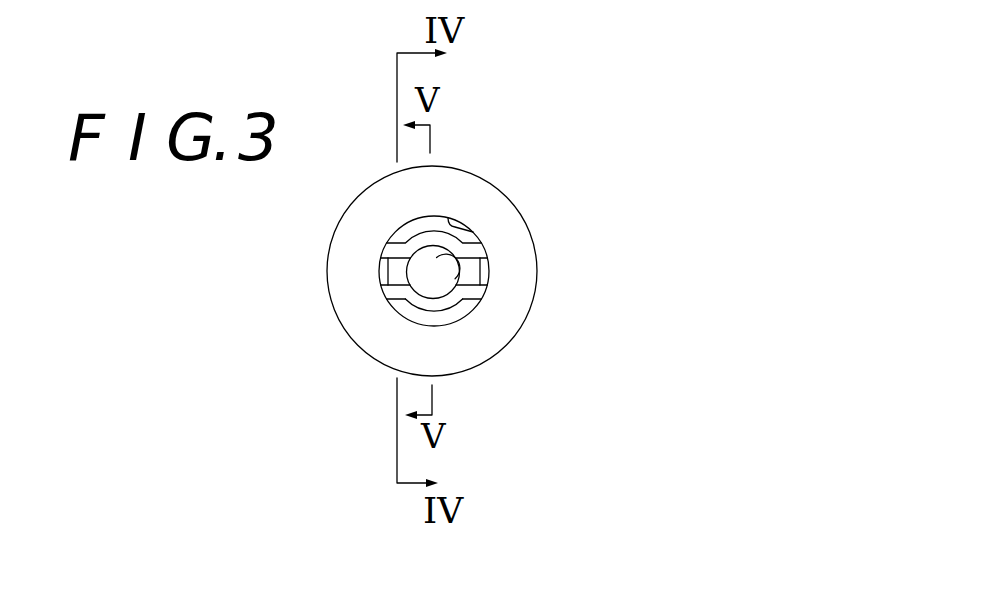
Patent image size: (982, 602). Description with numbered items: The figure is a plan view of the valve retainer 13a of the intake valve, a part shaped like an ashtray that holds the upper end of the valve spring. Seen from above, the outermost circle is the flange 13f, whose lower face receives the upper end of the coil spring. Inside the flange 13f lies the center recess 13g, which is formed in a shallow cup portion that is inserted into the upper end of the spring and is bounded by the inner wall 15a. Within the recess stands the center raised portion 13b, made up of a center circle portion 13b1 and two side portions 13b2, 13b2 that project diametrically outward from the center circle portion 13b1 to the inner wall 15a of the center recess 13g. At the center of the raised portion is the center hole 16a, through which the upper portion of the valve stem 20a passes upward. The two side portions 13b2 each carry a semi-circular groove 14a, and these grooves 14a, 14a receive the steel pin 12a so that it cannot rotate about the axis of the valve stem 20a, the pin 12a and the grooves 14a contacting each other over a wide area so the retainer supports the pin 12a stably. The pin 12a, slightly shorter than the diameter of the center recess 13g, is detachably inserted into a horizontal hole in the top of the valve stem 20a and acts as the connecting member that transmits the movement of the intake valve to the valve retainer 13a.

The pin 12a is at (387, 288).
The valve retainer 13a is at (533, 308).
The center raised portion 13b is at (517, 211).
The center circle portion 13b1 is at (428, 307).
The side portions 13b2 is at (393, 300).
The flange 13f is at (494, 322).
The center recess 13g is at (420, 220).
The semi-circular grooves 14a is at (392, 272).
The inner wall 15a is at (452, 241).
The center hole 16a is at (482, 268).
The valve stem 20a is at (440, 290).